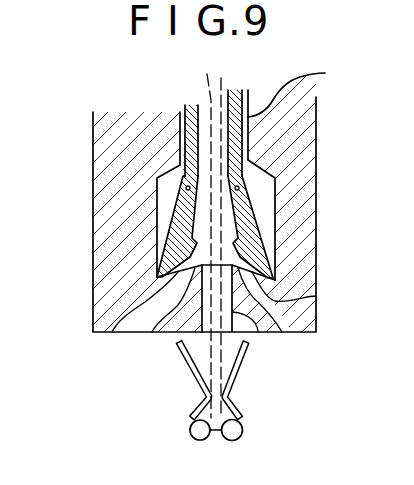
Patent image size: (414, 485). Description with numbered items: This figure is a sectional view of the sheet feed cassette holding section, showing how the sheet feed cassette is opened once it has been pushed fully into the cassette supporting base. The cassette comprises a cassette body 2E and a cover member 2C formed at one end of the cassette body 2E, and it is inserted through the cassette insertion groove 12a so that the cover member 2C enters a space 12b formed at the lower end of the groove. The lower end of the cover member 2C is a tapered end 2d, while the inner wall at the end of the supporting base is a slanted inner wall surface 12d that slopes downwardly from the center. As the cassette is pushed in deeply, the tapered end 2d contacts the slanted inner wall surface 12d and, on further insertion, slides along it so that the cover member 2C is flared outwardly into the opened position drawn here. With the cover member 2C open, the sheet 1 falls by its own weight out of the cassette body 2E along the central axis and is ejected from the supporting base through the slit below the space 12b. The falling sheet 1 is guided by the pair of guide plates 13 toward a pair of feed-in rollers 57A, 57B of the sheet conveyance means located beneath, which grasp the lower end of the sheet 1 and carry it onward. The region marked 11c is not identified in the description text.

The sheet 1 is at (210, 234).
The cassette body 2E is at (194, 105).
The cover member 2C is at (177, 238).
The cassette insertion groove 12a is at (227, 196).
The space 12b is at (260, 200).
The slanted inner wall surface 12d is at (152, 332).
The tapered end 2d is at (112, 332).
The groove 11c is at (258, 332).
The guide plates 13 is at (233, 383).
The feed-in roller 57A is at (188, 427).
The feed-in roller 57B is at (243, 427).